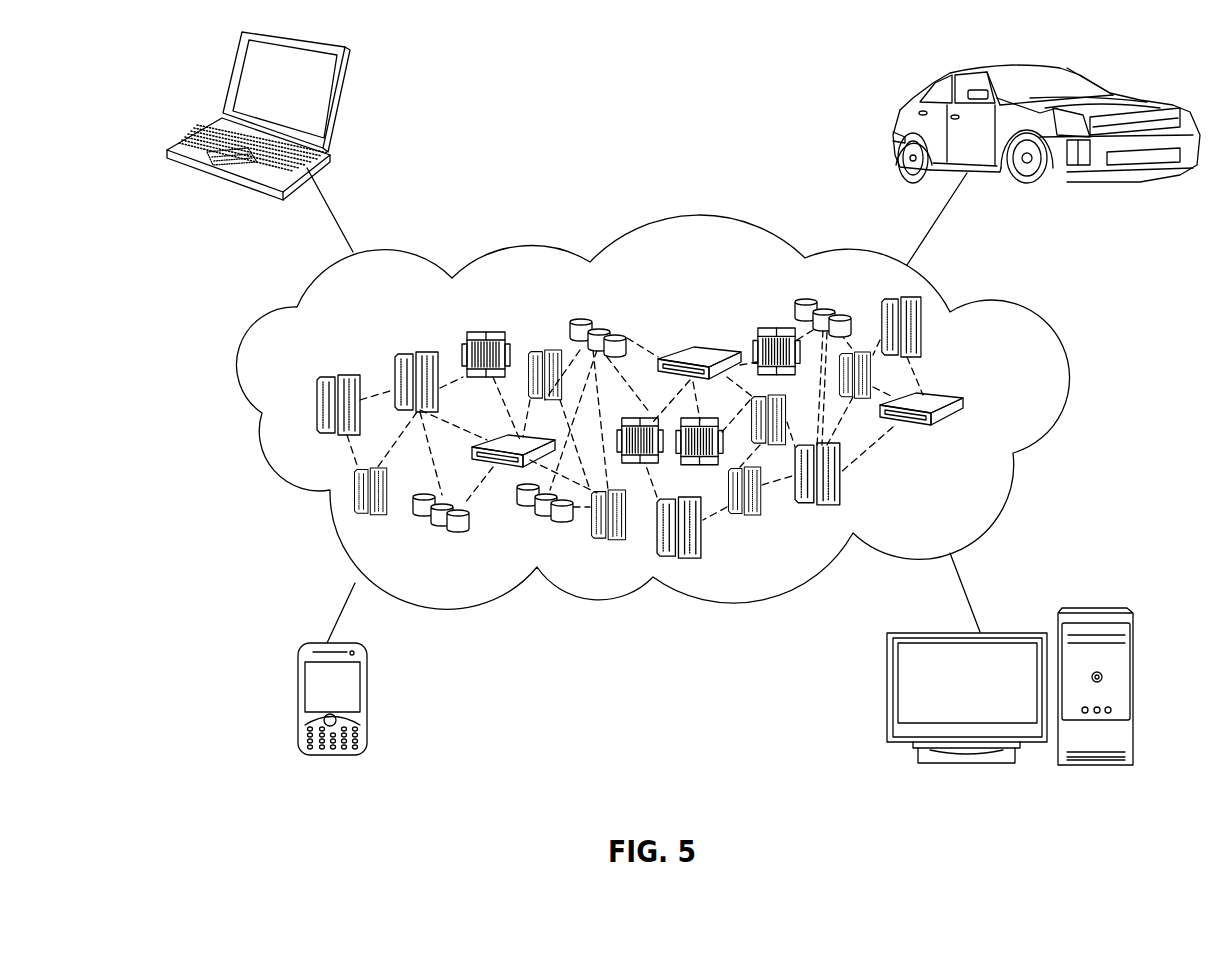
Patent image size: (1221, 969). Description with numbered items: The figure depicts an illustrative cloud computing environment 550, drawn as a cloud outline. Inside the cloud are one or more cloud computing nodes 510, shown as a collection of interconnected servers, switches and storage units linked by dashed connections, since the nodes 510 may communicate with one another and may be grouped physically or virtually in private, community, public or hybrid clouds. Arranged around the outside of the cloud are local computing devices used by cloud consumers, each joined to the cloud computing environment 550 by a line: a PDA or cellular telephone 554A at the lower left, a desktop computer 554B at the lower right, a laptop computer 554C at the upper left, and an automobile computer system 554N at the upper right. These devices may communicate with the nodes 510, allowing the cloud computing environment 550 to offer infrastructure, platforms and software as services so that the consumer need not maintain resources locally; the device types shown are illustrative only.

The cloud computing environment 550 is at (1025, 322).
The cloud computing nodes 510 is at (998, 405).
The PDA or cellular telephone 554A is at (300, 702).
The desktop computer 554B is at (1103, 608).
The laptop computer 554C is at (340, 98).
The automobile computer system 554N is at (900, 112).